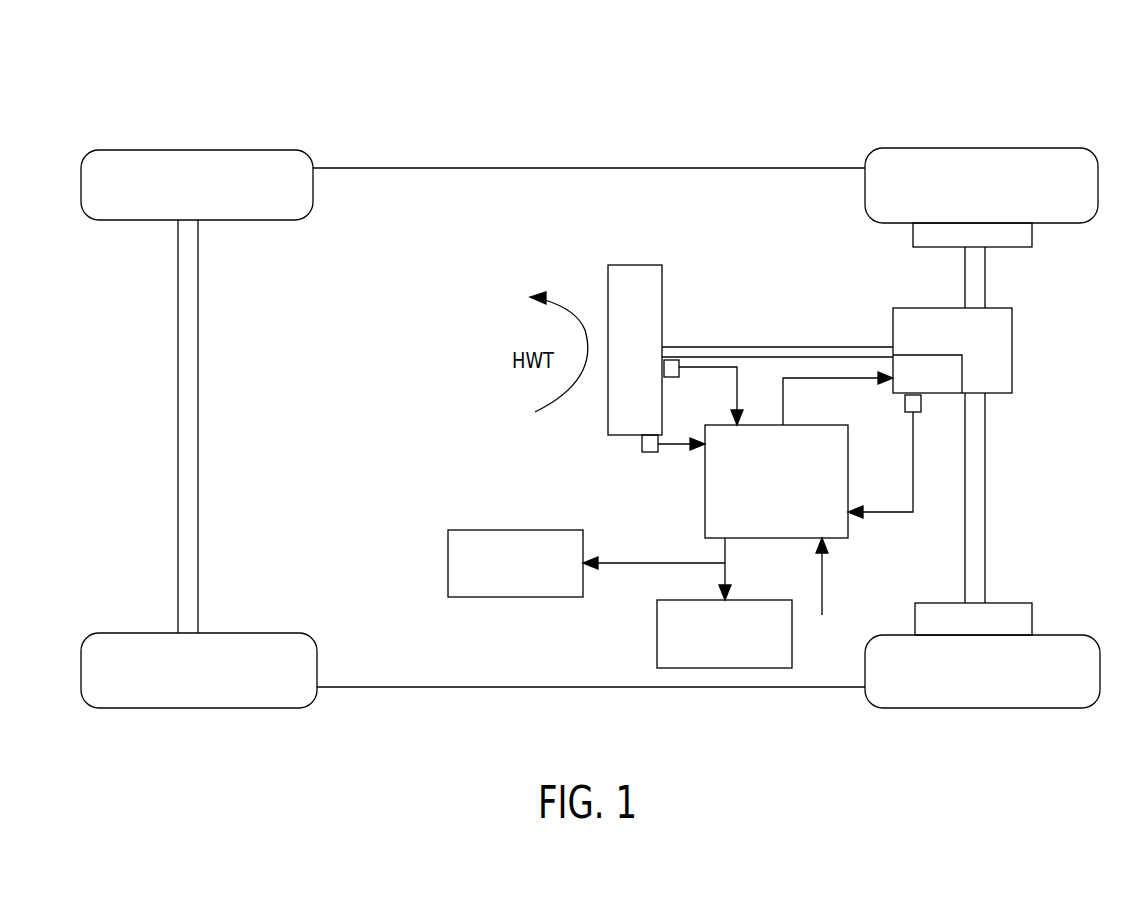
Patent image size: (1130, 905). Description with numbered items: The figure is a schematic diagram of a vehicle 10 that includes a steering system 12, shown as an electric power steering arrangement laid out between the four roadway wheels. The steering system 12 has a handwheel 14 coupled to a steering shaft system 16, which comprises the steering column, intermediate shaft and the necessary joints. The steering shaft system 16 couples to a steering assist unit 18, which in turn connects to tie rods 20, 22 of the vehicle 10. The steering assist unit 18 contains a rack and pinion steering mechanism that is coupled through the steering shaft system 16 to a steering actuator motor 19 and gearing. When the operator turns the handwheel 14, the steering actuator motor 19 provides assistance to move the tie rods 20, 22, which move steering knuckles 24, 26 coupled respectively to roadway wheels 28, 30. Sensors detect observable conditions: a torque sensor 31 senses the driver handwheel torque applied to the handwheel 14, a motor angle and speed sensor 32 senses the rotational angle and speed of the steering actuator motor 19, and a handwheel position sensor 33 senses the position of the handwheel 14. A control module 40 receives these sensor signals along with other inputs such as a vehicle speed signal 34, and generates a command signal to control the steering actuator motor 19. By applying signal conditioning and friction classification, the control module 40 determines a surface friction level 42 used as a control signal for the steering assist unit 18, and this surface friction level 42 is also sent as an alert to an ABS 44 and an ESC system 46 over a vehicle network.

The vehicle 10 is at (562, 108).
The steering system 12 is at (745, 268).
The handwheel 14 is at (641, 276).
The steering shaft system 16 is at (800, 352).
The steering assist unit 18 is at (1000, 338).
The steering actuator motor 19 is at (952, 384).
The tie rod 20 is at (975, 291).
The tie rod 22 is at (975, 481).
The steering knuckle 24 is at (925, 234).
The steering knuckle 26 is at (935, 616).
The roadway wheel 28 is at (934, 160).
The roadway wheel 30 is at (1048, 641).
The torque sensor 31 is at (668, 378).
The motor angle and speed sensor 32 is at (919, 414).
The handwheel position sensor 33 is at (650, 455).
The vehicle speed signal 34 is at (822, 590).
The control module 40 is at (850, 456).
The surface friction level 42 is at (727, 575).
The ABS 44 is at (492, 530).
The ESC system 46 is at (657, 619).